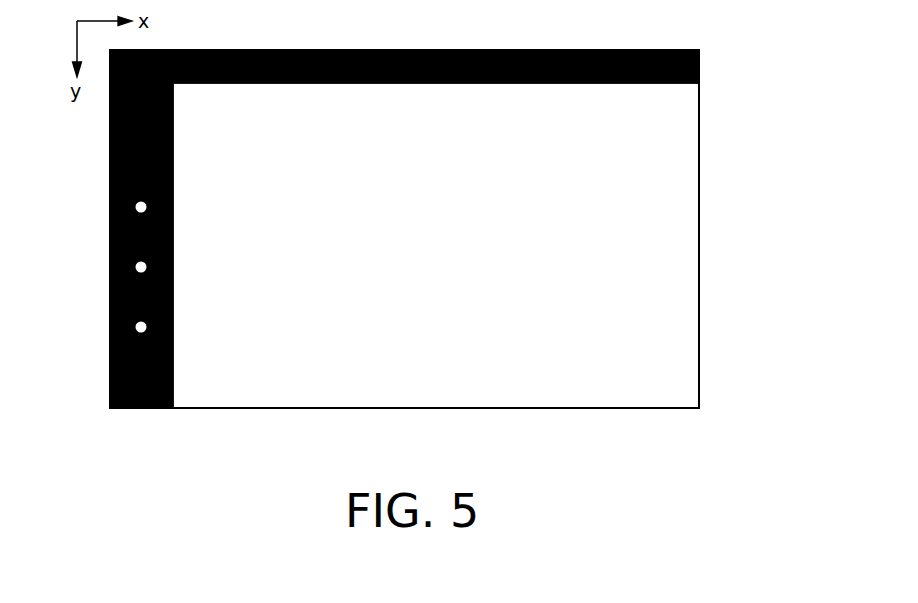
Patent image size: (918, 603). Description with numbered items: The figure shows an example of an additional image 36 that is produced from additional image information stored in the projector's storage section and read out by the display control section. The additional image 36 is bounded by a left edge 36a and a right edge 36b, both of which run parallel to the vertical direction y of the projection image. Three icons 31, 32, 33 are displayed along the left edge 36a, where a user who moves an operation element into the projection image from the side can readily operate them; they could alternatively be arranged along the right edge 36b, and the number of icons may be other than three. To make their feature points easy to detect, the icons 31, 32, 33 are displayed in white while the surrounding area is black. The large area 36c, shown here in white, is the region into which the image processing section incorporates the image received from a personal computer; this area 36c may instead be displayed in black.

The icon 31 is at (111, 218).
The icon 32 is at (111, 275).
The icon 33 is at (111, 335).
The additional image 36 is at (410, 222).
The left edge 36a is at (110, 137).
The right edge 36b is at (700, 147).
The area 36c is at (672, 257).